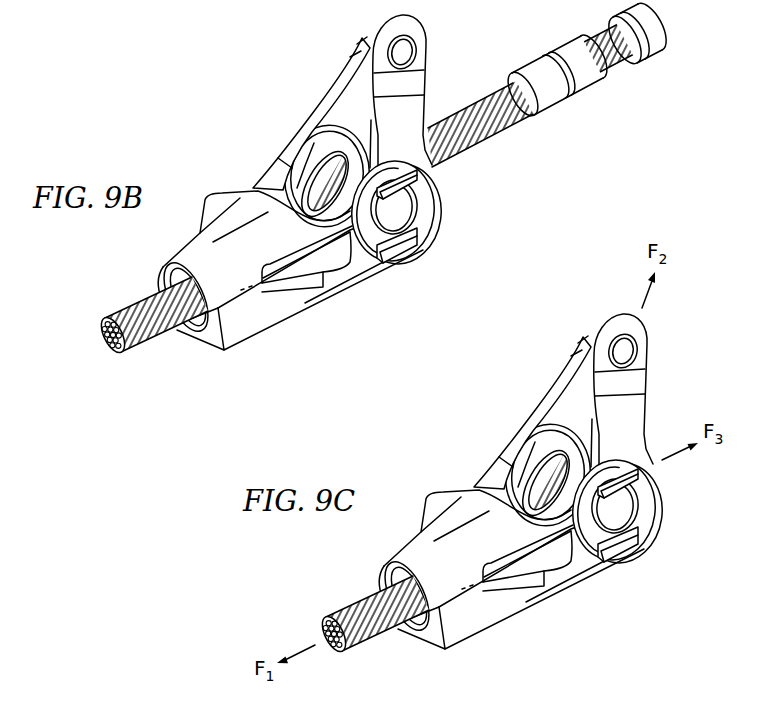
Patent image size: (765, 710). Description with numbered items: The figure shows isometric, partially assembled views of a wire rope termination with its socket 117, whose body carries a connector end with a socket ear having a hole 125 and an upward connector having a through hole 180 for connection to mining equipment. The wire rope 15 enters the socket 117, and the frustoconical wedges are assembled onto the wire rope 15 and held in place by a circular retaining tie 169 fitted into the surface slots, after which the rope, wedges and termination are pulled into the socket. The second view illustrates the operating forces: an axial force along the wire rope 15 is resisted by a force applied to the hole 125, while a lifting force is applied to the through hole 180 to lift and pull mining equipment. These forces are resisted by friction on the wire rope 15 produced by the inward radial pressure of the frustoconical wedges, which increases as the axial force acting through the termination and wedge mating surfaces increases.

In FIG. 9B, the wire rope 15 is at (152, 178).
In FIG. 9C, the wire rope 15 is at (373, 631).
In FIG. 9B, the socket 117 is at (211, 181).
In FIG. 9C, the socket 117 is at (510, 533).
In FIG. 9C, the hole 125 is at (623, 507).
In FIG. 9B, the circular retaining tie 169 is at (543, 62).
In FIG. 9C, the through hole 180 is at (628, 347).